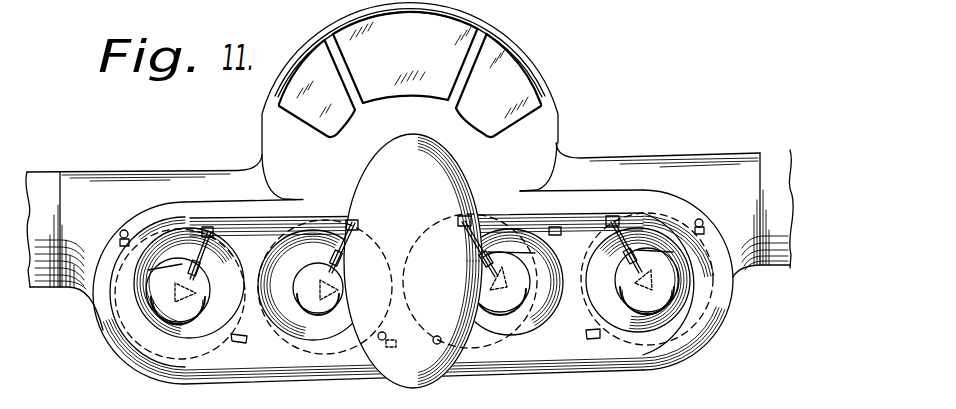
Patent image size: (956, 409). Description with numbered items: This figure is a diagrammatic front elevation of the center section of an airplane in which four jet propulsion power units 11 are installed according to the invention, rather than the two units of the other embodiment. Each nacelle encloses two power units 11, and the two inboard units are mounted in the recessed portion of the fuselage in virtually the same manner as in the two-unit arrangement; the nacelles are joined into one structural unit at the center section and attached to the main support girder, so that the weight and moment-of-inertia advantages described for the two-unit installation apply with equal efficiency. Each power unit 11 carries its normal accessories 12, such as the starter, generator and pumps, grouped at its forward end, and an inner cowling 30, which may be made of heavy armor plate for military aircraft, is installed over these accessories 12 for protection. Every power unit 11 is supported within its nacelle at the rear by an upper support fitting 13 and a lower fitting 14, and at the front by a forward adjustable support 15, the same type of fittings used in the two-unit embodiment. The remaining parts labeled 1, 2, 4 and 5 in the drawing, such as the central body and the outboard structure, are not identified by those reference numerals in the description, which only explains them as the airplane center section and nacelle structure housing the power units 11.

The central body 1 is at (413, 261).
The frame arm 2 is at (38, 172).
The race 4 is at (160, 376).
The window 5 is at (410, 101).
The power unit 11 is at (242, 272).
The accessories 12 is at (73, 296).
The upper support fitting 13 is at (122, 229).
The lower fitting 14 is at (239, 344).
The forward adjustable support 15 is at (204, 253).
The inner cowling 30 is at (413, 286).